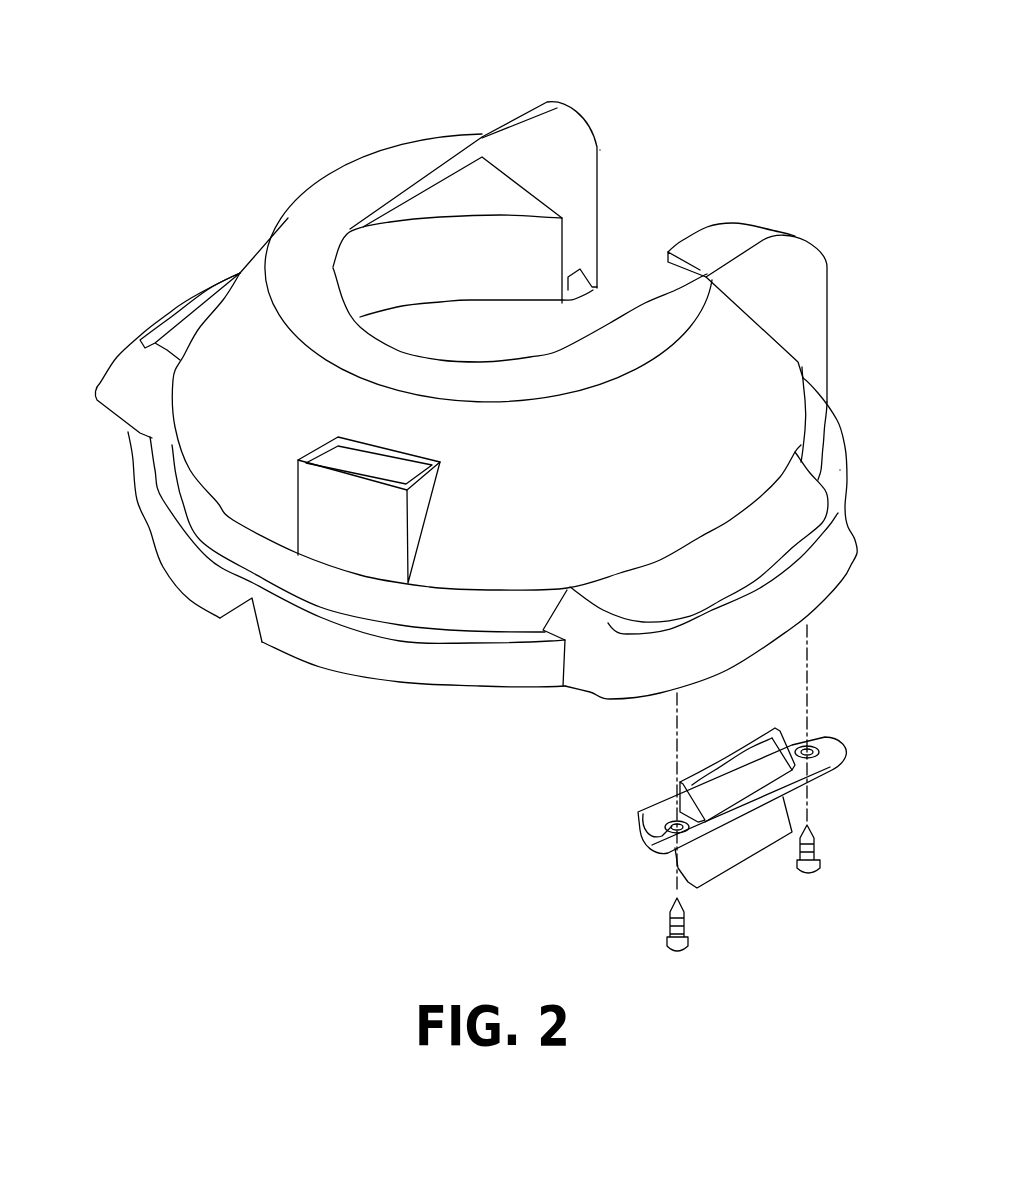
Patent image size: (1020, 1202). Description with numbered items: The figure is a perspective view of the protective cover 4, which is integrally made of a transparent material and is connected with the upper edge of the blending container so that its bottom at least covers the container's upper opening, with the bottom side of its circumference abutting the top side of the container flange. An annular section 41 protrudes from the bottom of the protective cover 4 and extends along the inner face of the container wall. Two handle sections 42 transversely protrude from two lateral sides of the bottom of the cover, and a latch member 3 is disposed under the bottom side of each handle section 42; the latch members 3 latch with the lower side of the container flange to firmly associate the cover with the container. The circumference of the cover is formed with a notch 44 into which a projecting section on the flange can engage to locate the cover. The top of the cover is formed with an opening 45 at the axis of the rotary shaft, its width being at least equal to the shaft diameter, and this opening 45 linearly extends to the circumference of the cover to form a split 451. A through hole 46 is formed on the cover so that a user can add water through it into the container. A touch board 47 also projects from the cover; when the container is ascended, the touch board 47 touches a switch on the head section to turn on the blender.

The protective cover 4 is at (312, 35).
The annular section 41 is at (593, 303).
The handle sections 42 is at (115, 402).
The notch 44 is at (243, 622).
The opening 45 is at (485, 342).
The split 451 is at (672, 203).
The through hole 46 is at (368, 467).
The touch board 47 is at (715, 253).
The latch member 3 is at (741, 845).